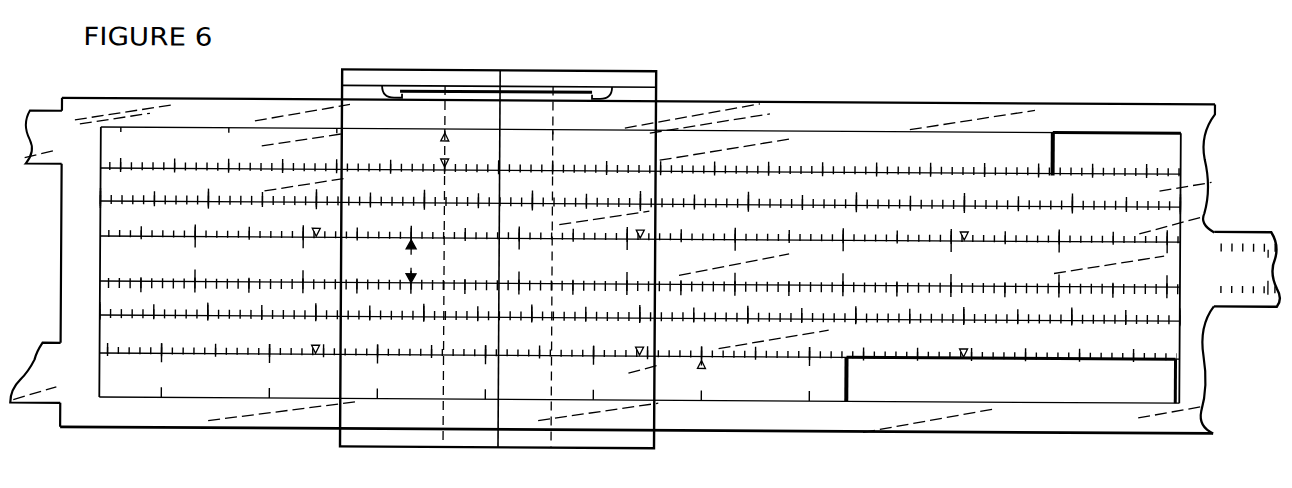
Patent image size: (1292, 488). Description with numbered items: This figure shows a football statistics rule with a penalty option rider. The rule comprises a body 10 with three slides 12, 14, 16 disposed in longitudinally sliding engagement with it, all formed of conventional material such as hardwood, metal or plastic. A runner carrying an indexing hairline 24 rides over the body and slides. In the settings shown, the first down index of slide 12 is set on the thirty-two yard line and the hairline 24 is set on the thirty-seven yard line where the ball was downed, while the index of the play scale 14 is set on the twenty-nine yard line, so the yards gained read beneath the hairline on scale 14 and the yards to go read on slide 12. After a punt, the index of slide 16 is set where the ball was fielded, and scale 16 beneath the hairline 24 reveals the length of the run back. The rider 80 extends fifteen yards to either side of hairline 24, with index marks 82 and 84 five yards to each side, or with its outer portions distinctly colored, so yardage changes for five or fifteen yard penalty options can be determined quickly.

The body 10 is at (733, 104).
The slide 12 is at (827, 137).
The play scale slide 14 is at (1236, 296).
The slide 16 is at (833, 390).
The hairline 24 is at (503, 70).
The rider 80 is at (657, 77).
The index mark 82 is at (447, 83).
The index mark 84 is at (555, 83).